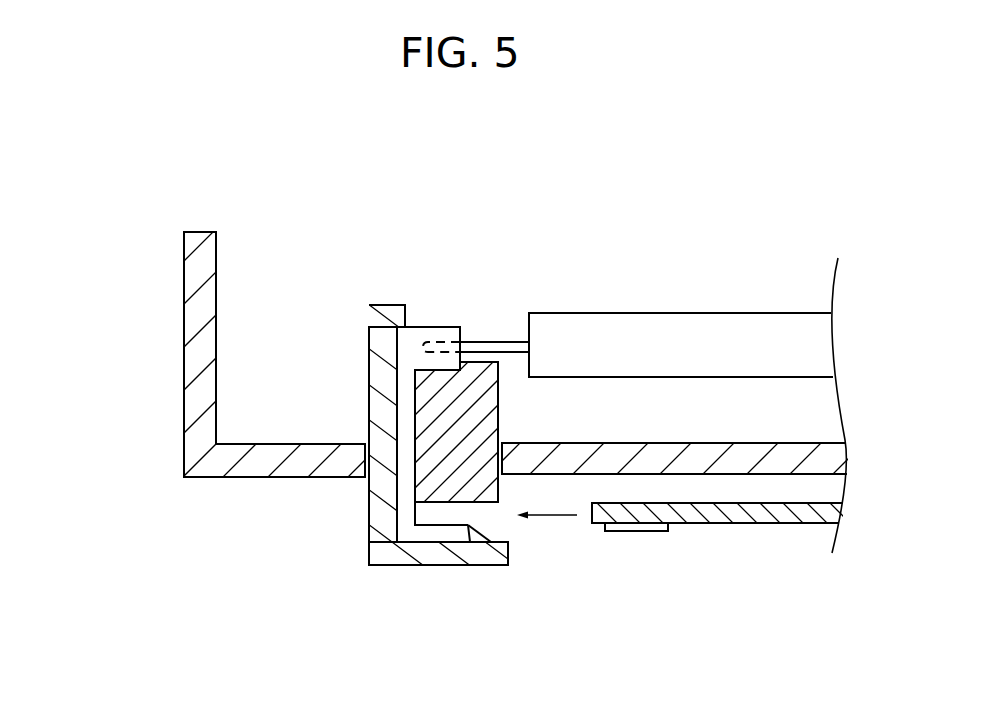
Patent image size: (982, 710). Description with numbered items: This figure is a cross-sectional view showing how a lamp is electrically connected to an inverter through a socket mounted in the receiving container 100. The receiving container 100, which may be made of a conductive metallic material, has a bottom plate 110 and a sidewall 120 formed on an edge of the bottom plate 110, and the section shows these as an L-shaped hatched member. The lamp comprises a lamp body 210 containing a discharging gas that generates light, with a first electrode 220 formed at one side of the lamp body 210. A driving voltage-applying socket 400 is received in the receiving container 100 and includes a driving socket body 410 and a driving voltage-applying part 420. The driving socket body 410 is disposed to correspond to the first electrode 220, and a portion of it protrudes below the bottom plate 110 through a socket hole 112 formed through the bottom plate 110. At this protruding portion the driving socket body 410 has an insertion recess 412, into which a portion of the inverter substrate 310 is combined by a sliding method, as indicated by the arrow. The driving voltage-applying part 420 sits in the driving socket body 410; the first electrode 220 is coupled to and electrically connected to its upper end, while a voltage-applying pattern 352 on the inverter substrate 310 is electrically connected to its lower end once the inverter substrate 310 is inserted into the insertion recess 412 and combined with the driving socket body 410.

The receiving container 100 is at (337, 375).
The bottom plate 110 is at (229, 501).
The socket hole 112 is at (367, 458).
The sidewall 120 is at (184, 323).
The lamp body 210 is at (638, 330).
The first electrode 220 is at (500, 342).
The inverter substrate 310 is at (730, 513).
The voltage-applying pattern 352 is at (638, 531).
The driving voltage-applying socket 400 is at (515, 414).
The driving socket body 410 is at (385, 553).
The insertion recess 412 is at (493, 575).
The driving voltage-applying part 420 is at (448, 535).